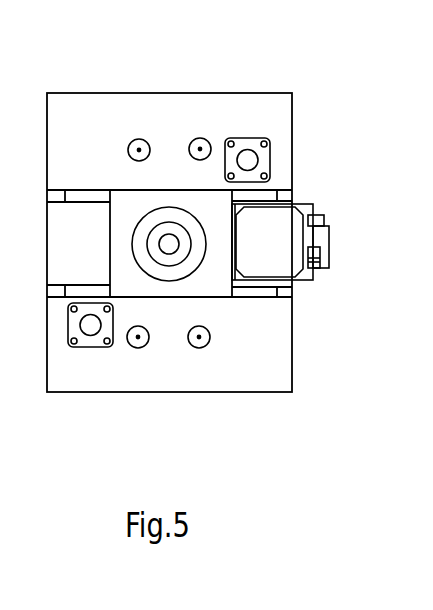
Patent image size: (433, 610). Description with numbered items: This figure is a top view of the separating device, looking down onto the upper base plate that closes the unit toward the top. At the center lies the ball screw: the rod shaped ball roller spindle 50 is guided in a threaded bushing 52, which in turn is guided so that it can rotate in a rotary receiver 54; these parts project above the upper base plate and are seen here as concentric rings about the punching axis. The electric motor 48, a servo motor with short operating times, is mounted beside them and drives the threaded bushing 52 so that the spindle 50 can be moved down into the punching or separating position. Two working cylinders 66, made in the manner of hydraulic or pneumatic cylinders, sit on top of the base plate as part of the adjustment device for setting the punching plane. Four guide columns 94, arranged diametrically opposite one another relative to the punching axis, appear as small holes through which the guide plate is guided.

The electric motor 48 is at (277, 220).
The ball roller spindle 50 is at (174, 244).
The threaded bushing 52 is at (170, 254).
The rotary receiver 54 is at (185, 259).
The working cylinders 66 is at (249, 158).
The guide columns 94 is at (139, 148).